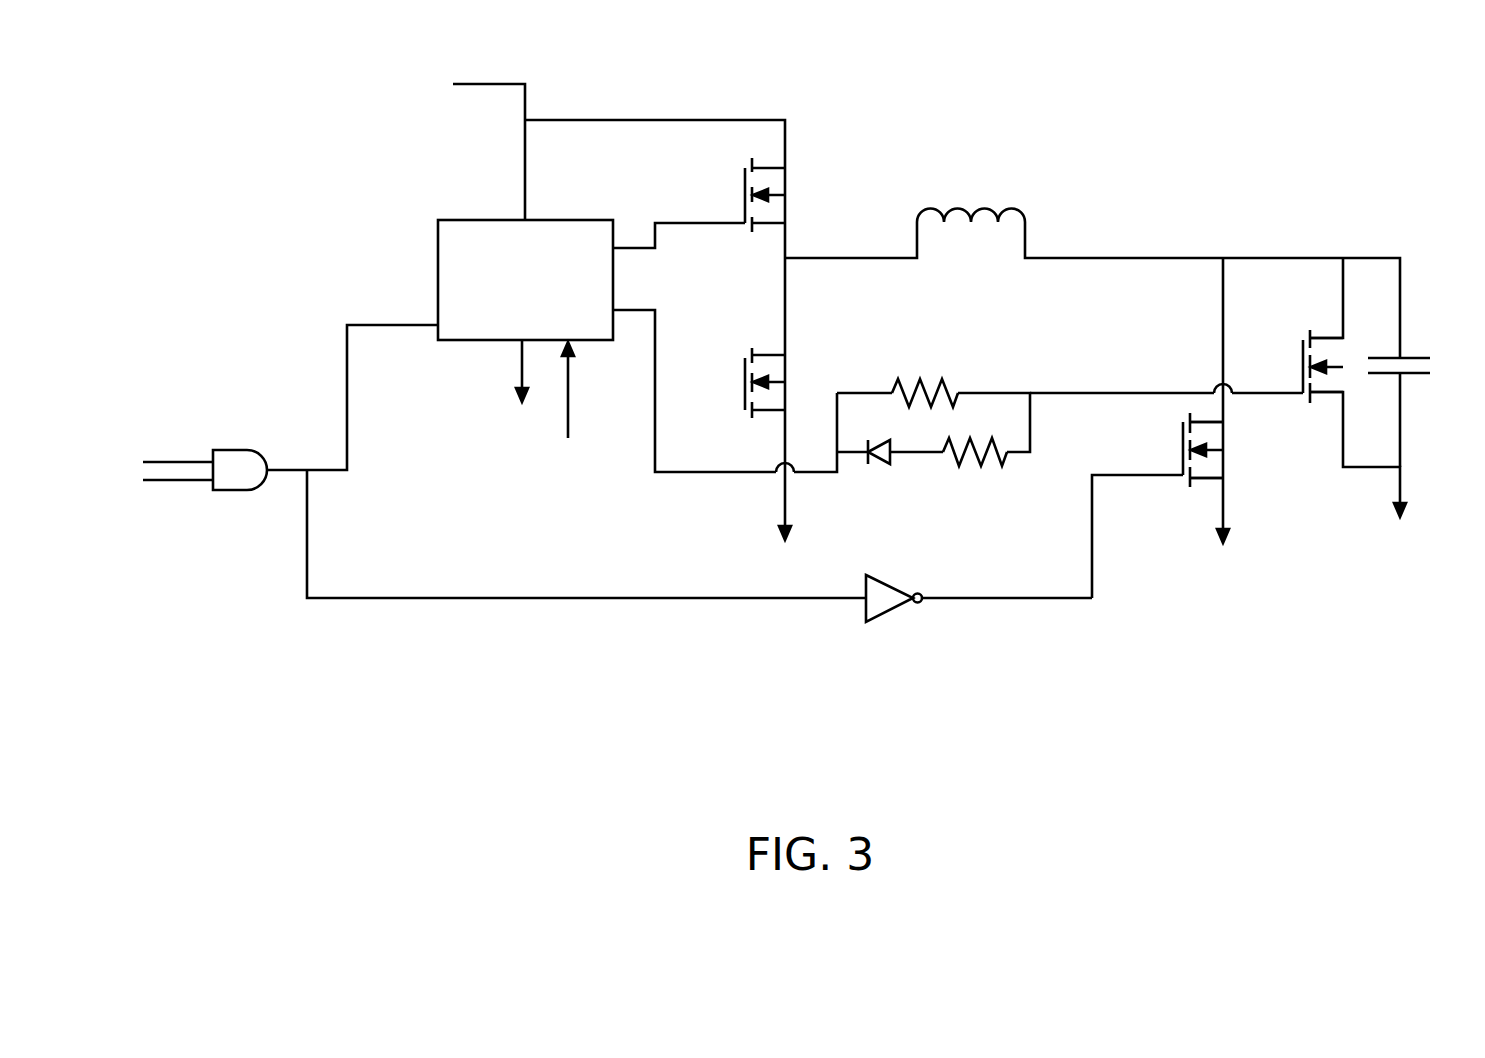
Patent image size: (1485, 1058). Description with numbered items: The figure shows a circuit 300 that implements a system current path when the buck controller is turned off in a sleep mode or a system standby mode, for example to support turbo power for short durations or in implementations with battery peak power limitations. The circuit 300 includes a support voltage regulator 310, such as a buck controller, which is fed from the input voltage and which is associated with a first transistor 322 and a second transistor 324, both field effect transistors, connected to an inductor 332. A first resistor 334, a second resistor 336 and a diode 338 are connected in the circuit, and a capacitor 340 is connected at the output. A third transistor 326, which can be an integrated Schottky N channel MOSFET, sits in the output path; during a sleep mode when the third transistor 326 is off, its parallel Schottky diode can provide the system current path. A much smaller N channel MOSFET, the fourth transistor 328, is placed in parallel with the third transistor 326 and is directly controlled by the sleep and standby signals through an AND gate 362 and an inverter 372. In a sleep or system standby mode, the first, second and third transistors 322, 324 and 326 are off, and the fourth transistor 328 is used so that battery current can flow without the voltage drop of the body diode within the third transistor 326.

The circuit 300 is at (830, 821).
The support voltage regulator 310 is at (438, 245).
The transistor M1 322 is at (745, 187).
The transistor M2 324 is at (745, 375).
The transistor M3 326 is at (1303, 365).
The transistor M4 328 is at (1183, 448).
The inductor L1 332 is at (1010, 208).
The resistor R1 334 is at (952, 380).
The resistor R2 336 is at (1005, 455).
The diode D1 338 is at (870, 455).
The capacitor 340 is at (1403, 356).
The AND gate 362 is at (223, 450).
The inverter 372 is at (882, 614).